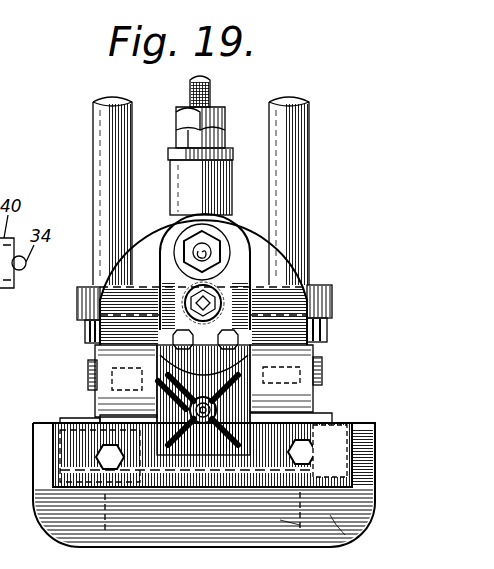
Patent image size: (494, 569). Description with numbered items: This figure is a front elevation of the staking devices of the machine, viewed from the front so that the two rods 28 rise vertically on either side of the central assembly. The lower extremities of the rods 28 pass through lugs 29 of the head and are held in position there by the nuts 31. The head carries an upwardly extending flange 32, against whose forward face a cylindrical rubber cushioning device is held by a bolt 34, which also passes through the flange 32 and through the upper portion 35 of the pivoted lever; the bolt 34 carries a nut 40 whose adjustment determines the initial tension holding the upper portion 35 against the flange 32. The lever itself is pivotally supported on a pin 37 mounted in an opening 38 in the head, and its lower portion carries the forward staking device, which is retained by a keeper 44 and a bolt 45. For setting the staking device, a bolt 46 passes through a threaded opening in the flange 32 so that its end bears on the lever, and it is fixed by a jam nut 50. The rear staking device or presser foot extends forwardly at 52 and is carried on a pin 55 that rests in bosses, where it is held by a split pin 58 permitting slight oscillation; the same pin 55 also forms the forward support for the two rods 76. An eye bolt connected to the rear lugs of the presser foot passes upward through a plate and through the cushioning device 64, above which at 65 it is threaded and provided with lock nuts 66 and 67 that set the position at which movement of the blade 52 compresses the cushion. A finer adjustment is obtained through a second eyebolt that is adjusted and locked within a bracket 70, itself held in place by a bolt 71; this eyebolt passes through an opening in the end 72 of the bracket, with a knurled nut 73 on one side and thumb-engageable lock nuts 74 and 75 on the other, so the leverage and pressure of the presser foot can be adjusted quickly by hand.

The rods 28 is at (105, 118).
The lugs 29 is at (80, 305).
The nuts 31 is at (92, 330).
The flange 32 is at (222, 225).
The bolt 34 is at (226, 240).
The upper portion of lever 35 is at (242, 242).
The pin 37 is at (88, 373).
The opening 38 is at (100, 358).
The nut 40 is at (198, 248).
The keeper 44 is at (75, 455).
The bolt 45 is at (110, 460).
The bolt 46 is at (213, 298).
The jam nut 50 is at (227, 306).
The forward extension of presser foot 52 is at (284, 522).
The pin 55 is at (44, 465).
The split pin 58 is at (62, 420).
The cushioning device 64 is at (185, 195).
The threaded end of eye bolt 65 is at (210, 86).
The lock nut 66 is at (230, 148).
The lock nut 67 is at (226, 112).
The bracket 70 is at (170, 377).
The bolt 71 is at (225, 338).
The end of bracket 72 is at (215, 472).
The knurled nut 73 is at (333, 518).
The lock nut 74 is at (190, 430).
The lock nut 75 is at (225, 435).
The rods 76 is at (78, 419).